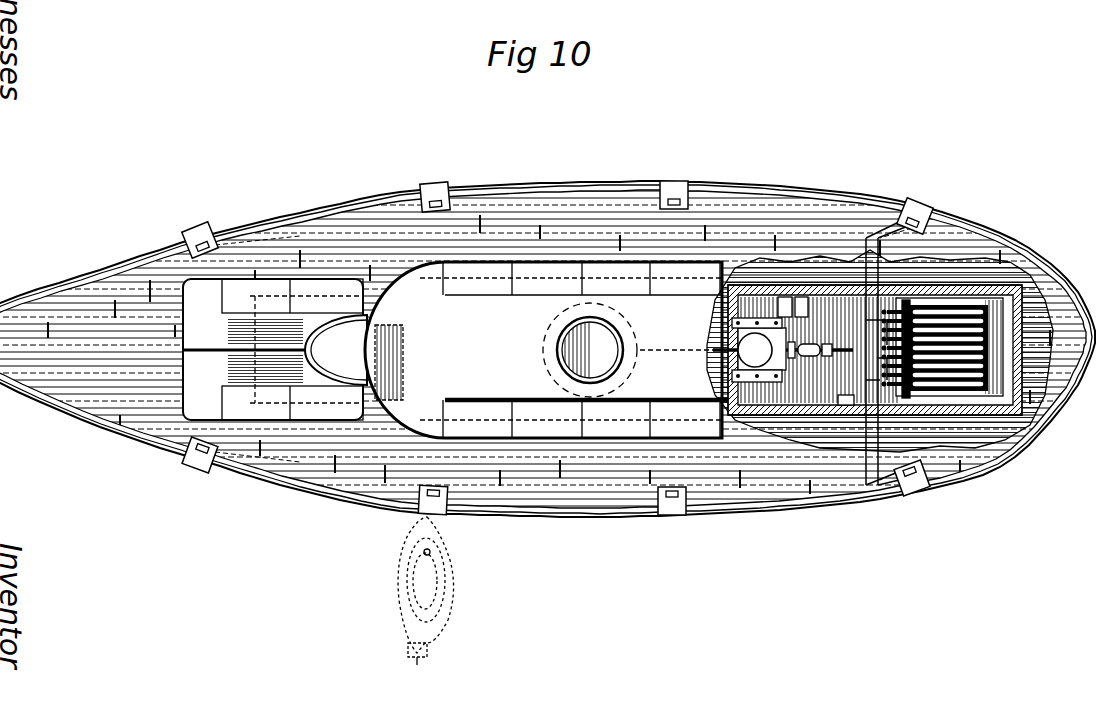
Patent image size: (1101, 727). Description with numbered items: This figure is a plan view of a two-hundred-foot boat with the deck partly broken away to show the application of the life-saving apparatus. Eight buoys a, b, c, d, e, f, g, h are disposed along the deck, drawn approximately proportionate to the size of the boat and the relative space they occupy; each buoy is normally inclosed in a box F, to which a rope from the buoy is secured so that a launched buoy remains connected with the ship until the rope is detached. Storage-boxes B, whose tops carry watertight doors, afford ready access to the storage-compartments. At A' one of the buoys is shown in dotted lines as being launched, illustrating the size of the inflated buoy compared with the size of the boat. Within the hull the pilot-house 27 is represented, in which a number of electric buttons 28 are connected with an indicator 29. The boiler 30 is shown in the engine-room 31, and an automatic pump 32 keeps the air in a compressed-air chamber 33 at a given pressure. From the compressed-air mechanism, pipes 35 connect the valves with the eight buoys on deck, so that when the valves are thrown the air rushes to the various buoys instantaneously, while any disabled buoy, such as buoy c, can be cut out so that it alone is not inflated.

The pilot-house 27 is at (336, 350).
The electric buttons 28 is at (405, 341).
The indicator 29 is at (850, 378).
The boiler 30 is at (605, 303).
The engine-room 31 is at (783, 339).
The automatic pump 32 is at (797, 262).
The compressed-air chamber 33 is at (957, 303).
The pipes 35 is at (879, 238).
The storage-boxes B is at (622, 344).
The launched buoy A' is at (435, 591).
The box F is at (555, 352).
The buoy a is at (915, 207).
The buoy b is at (674, 182).
The buoy c is at (435, 186).
The buoy d is at (198, 231).
The buoy e is at (198, 467).
The buoy f is at (445, 514).
The buoy g is at (672, 516).
The buoy h is at (913, 488).